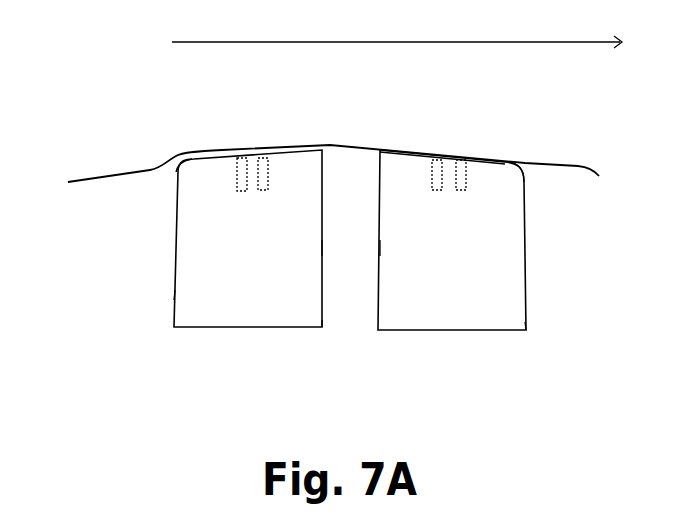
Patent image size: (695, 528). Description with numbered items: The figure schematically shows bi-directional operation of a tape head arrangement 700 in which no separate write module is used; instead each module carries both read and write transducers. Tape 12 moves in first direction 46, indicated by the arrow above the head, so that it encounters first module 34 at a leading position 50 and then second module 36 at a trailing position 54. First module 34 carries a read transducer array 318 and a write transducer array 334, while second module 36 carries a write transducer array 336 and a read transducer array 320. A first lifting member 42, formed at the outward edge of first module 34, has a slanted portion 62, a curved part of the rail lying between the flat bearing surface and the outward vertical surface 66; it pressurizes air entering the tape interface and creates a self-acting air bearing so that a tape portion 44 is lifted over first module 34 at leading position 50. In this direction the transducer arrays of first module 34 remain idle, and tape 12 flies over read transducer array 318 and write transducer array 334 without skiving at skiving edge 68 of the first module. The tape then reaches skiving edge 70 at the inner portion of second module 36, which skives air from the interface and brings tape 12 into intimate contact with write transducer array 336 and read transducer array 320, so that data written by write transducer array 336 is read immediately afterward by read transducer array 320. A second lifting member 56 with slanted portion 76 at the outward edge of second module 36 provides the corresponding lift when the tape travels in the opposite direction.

The tape 12 is at (148, 167).
The first module 34 is at (322, 312).
The second module 36 is at (525, 323).
The first lifting member 42 is at (150, 234).
The tape portion 44 is at (219, 131).
The first direction 46 is at (242, 42).
The leading position 50 is at (252, 345).
The trailing position 54 is at (452, 347).
The second lifting member 56 is at (574, 230).
The slanted portion 62 is at (178, 169).
The outward vertical surface 66 is at (175, 302).
The skiving edge 68 is at (322, 248).
The skiving edge 70 is at (380, 247).
The slanted portion 76 is at (522, 172).
The read transducer array 318 is at (237, 173).
The read transducer array 320 is at (466, 183).
The write transducer array 334 is at (268, 173).
The write transducer array 336 is at (432, 183).
The tape head arrangement 700 is at (118, 350).